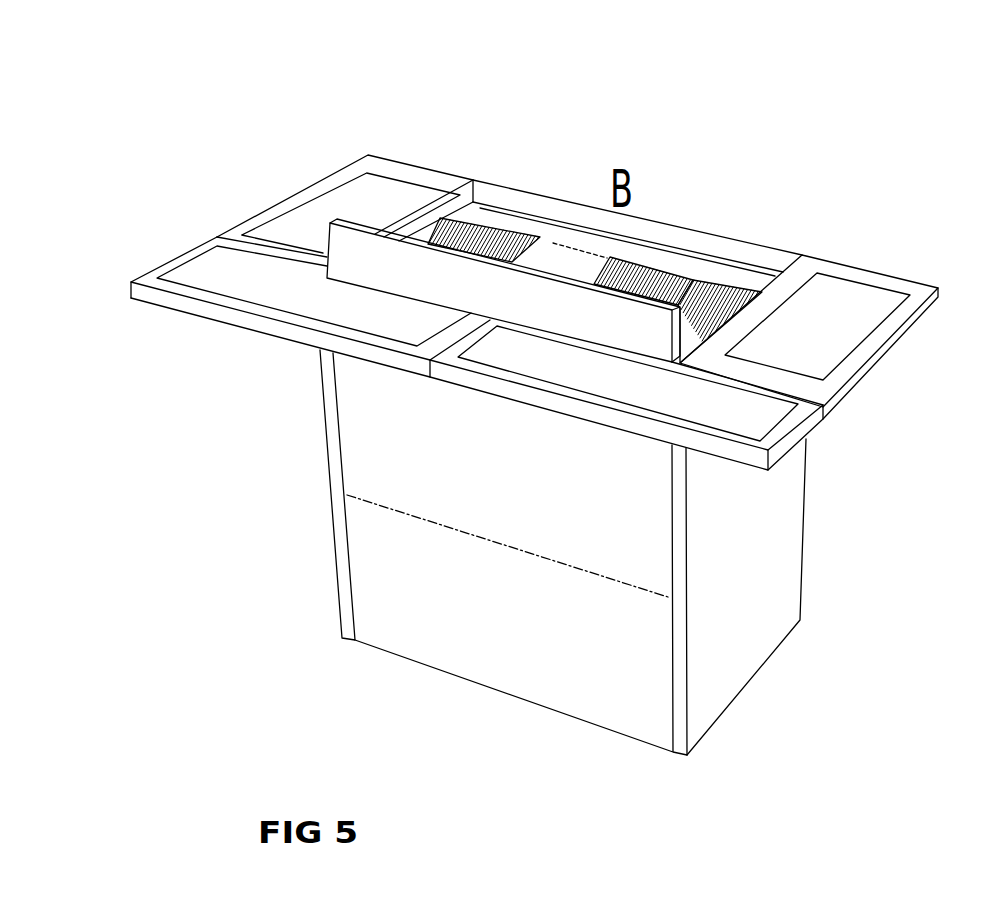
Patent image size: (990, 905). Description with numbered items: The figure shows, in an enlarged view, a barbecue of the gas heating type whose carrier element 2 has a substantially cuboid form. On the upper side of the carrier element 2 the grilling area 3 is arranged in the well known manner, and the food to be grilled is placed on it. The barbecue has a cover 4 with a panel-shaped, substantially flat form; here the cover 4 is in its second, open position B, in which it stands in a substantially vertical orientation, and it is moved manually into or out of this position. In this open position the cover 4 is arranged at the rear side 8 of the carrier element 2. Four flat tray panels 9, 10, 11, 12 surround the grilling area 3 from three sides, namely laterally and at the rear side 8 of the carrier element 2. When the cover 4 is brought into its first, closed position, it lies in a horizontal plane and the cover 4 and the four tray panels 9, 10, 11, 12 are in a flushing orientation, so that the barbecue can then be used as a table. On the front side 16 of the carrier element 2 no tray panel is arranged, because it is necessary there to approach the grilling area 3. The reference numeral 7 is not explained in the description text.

The carrier element 2 is at (740, 657).
The grilling area 3 is at (653, 268).
The cover 4 is at (524, 292).
The grill appliance 7 is at (668, 142).
The rear side 8 is at (506, 703).
The tray panel 9 is at (350, 192).
The tray panel 10 is at (230, 287).
The tray panel 11 is at (750, 413).
The tray panel 12 is at (857, 302).
The front side 16 is at (501, 185).